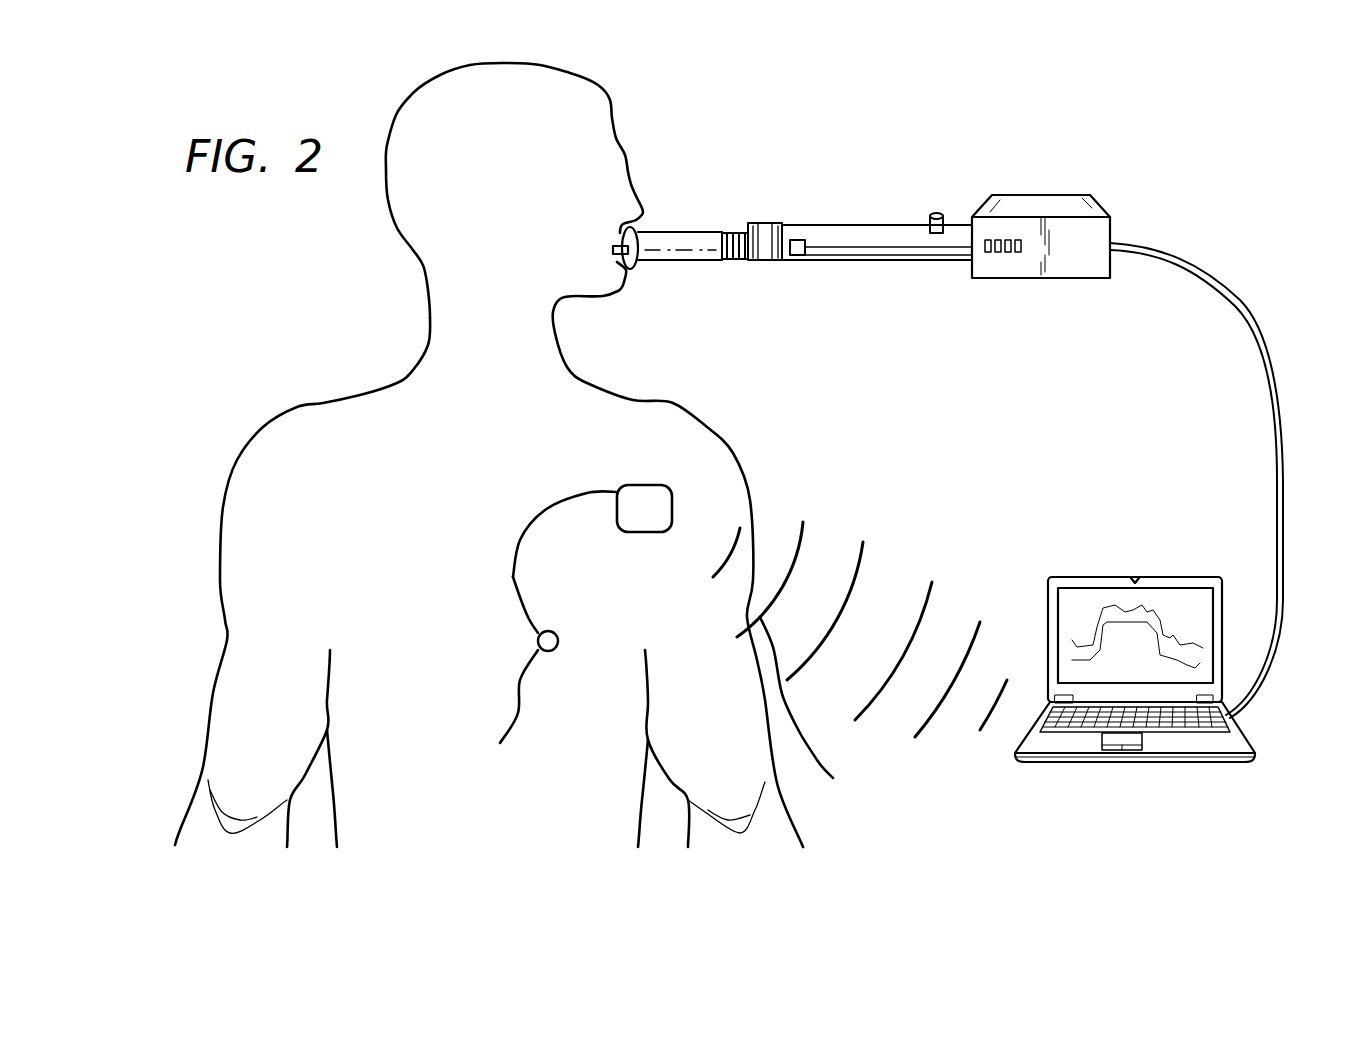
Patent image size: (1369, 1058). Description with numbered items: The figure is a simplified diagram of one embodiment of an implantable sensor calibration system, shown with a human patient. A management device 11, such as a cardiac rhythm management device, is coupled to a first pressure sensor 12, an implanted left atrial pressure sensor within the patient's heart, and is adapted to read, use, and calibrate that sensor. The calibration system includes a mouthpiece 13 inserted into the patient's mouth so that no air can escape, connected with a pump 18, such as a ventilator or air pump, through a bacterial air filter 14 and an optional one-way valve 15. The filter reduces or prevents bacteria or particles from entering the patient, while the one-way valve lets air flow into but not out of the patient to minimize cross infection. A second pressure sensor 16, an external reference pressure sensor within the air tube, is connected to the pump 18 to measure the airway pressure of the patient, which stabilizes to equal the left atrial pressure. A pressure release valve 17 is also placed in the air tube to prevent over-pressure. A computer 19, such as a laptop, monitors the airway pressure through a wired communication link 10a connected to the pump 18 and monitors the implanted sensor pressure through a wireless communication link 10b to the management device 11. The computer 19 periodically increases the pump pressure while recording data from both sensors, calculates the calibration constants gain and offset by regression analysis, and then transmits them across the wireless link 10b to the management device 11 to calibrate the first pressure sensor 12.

The communication link 10a is at (1255, 318).
The wireless communication link 10b is at (945, 690).
The management device 11 is at (667, 485).
The first pressure sensor 12 is at (538, 652).
The mouthpiece 13 is at (640, 227).
The bacterial air filter 14 is at (725, 233).
The one-way valve 15 is at (788, 225).
The second pressure sensor 16 is at (805, 241).
The pressure release valve 17 is at (935, 234).
The pump 18 is at (1016, 278).
The computer 19 is at (1168, 576).